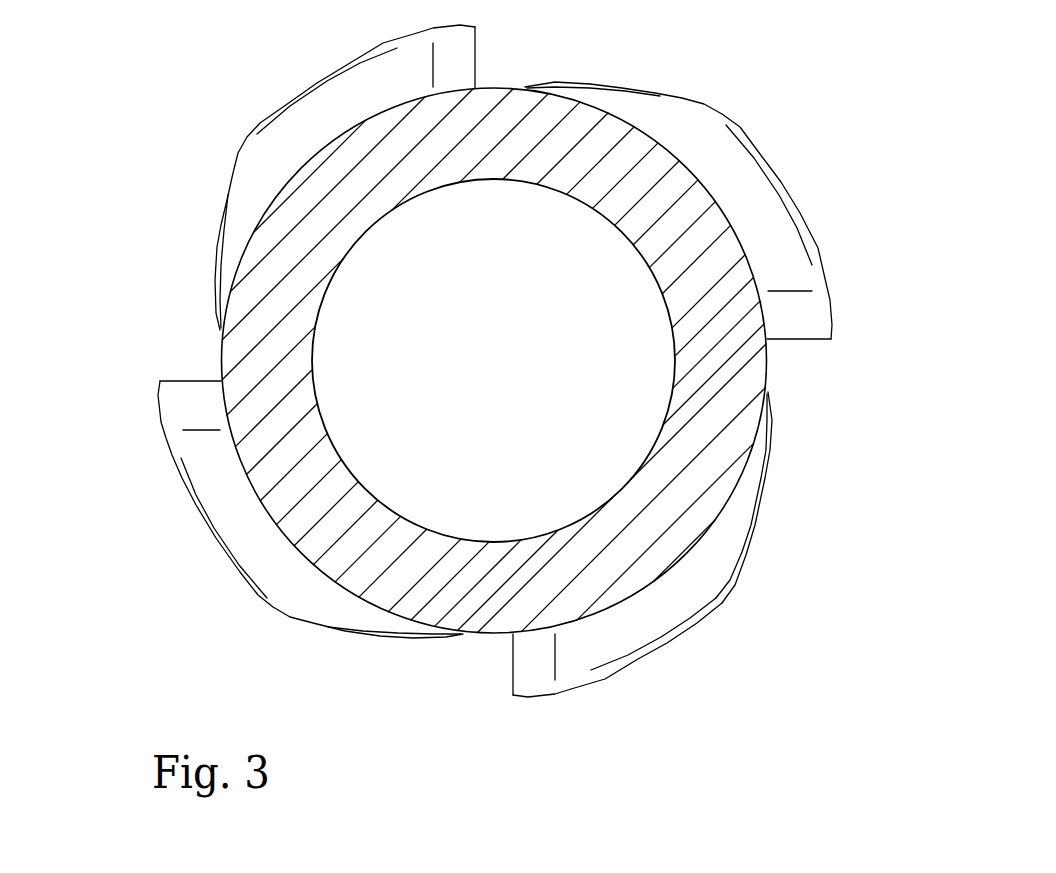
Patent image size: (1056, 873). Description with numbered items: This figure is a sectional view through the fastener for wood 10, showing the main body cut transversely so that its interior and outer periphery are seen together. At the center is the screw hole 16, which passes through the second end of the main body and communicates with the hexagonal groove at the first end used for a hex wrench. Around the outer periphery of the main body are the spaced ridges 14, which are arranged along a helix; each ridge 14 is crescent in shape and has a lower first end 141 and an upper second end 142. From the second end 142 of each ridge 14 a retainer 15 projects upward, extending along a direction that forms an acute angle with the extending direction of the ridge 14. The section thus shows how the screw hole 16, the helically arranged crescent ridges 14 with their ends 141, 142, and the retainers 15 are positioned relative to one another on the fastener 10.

The fastener for wood 10 is at (560, 432).
The ridge 14 is at (771, 615).
The lower first end 141 is at (872, 497).
The upper second end 142 is at (644, 704).
The retainer 15 is at (534, 736).
The screw hole 16 is at (671, 360).